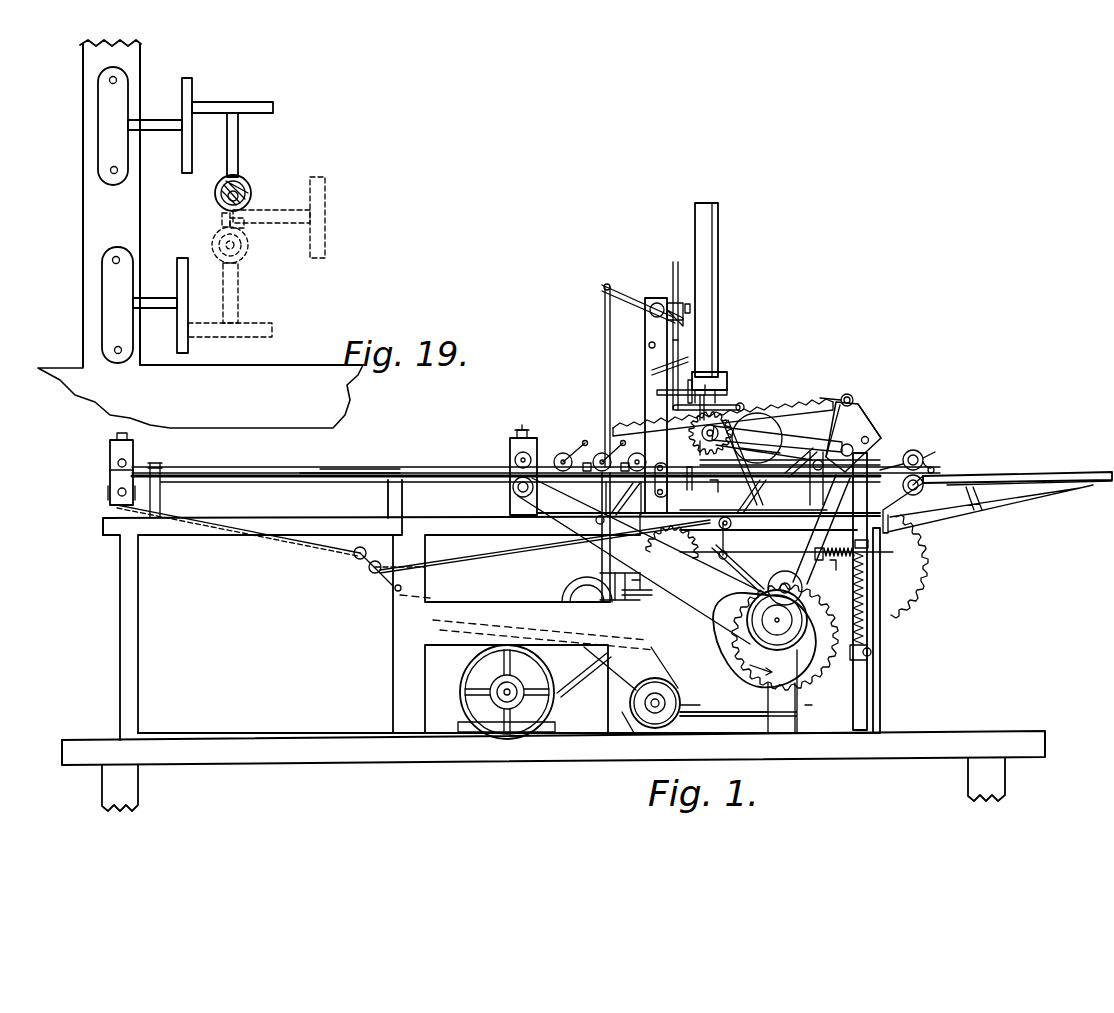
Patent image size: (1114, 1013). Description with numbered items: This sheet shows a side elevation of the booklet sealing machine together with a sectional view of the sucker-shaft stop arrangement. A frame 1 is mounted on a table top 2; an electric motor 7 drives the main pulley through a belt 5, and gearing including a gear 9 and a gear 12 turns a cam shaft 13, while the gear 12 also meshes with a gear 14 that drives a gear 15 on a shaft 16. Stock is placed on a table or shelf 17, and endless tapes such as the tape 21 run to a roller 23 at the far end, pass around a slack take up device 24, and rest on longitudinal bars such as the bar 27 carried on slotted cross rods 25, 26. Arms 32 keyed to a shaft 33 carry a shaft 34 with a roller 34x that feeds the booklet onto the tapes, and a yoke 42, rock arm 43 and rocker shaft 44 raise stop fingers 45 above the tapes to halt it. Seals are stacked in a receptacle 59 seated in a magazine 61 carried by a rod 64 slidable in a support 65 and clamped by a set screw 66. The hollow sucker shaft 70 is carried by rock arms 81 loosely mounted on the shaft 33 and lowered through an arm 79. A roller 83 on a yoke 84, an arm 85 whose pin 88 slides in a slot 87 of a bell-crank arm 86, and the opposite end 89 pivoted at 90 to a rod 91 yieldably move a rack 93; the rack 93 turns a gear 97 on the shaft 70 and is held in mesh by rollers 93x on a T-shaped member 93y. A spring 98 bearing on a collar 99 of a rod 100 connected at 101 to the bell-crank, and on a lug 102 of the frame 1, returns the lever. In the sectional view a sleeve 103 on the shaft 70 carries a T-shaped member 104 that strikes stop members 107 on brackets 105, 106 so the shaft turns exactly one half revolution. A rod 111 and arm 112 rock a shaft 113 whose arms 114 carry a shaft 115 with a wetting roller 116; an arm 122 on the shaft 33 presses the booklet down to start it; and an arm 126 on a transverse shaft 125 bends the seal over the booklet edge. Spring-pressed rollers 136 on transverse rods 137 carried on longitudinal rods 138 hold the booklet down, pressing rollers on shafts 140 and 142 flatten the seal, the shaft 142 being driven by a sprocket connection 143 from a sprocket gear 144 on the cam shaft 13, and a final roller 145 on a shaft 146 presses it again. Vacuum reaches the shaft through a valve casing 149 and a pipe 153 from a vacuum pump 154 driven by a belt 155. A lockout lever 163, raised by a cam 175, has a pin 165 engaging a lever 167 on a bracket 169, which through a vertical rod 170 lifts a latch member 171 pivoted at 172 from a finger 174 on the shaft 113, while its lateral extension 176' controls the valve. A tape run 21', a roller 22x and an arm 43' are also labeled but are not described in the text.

In FIG. 19, the frame 1 is at (87, 224).
In FIG. 1, the frame 1 is at (138, 645).
In FIG. 1, the table top 2 is at (66, 741).
In FIG. 1, the belt 5 is at (584, 677).
In FIG. 1, the electric motor 7 is at (460, 692).
In FIG. 1, the gear 9 is at (701, 701).
In FIG. 1, the gear 12 is at (812, 683).
In FIG. 1, the cam shaft 13 is at (793, 620).
In FIG. 1, the gear 14 is at (920, 577).
In FIG. 1, the gear 15 is at (940, 474).
In FIG. 1, the shaft 16 is at (940, 505).
In FIG. 1, the table or shelf 17 is at (1022, 474).
In FIG. 1, the endless belt or tape 21 is at (536, 513).
In FIG. 1, the cord 21' is at (271, 548).
In FIG. 1, the roller 22x is at (903, 487).
In FIG. 1, the roller 23 is at (117, 488).
In FIG. 1, the slack take up device 24 is at (372, 573).
In FIG. 1, the cross rod 25 is at (375, 481).
In FIG. 1, the cross rod 26 is at (903, 455).
In FIG. 1, the supporting bar 27 is at (262, 481).
In FIG. 1, the arm 32 is at (920, 455).
In FIG. 1, the shaft 33 is at (843, 444).
In FIG. 1, the shaft 34 is at (935, 467).
In FIG. 1, the roller 34x is at (944, 448).
In FIG. 1, the yoke 42 is at (738, 583).
In FIG. 1, the rock arm 43 is at (709, 541).
In FIG. 1, the link 43' is at (842, 569).
In FIG. 1, the rocker shaft 44 is at (732, 523).
In FIG. 1, the fingers or arms 45 is at (697, 489).
In FIG. 1, the receptacle 59 is at (718, 262).
In FIG. 1, the magazine 61 is at (715, 375).
In FIG. 1, the rod 64 is at (678, 350).
In FIG. 1, the support 65 is at (684, 306).
In FIG. 1, the set screw 66 is at (690, 310).
In FIG. 19, the hollow shaft 70 is at (251, 191).
In FIG. 1, the hollow shaft 70 is at (686, 451).
In FIG. 1, the arm 79 is at (787, 480).
In FIG. 1, the rock arm 81 is at (790, 446).
In FIG. 1, the roller 83 is at (800, 596).
In FIG. 1, the yoke 84 is at (791, 585).
In FIG. 1, the arm 85 is at (818, 520).
In FIG. 1, the arm of bell-crank lever 86 is at (866, 426).
In FIG. 1, the slot 87 is at (800, 483).
In FIG. 1, the pin 88 is at (777, 441).
In FIG. 1, the end of bell-crank lever 89 is at (852, 412).
In FIG. 1, the pivotal connection 90 is at (851, 396).
In FIG. 1, the rod 91 is at (833, 398).
In FIG. 1, the rack 93 is at (800, 400).
In FIG. 1, the rollers 93x is at (760, 395).
In FIG. 1, the T-shaped member 93y is at (742, 403).
In FIG. 1, the gear 97 is at (689, 436).
In FIG. 1, the spring 98 is at (866, 630).
In FIG. 1, the collar 99 is at (869, 545).
In FIG. 1, the rod 100 is at (853, 527).
In FIG. 1, the connection 101 is at (868, 438).
In FIG. 1, the lug 102 is at (872, 652).
In FIG. 19, the sleeve 103 is at (246, 181).
In FIG. 19, the T-shaped member 104 is at (250, 100).
In FIG. 1, the T-shaped member 104 is at (727, 384).
In FIG. 19, the bracket 105 is at (106, 148).
In FIG. 1, the bracket 105 is at (657, 392).
In FIG. 19, the bracket 106 is at (110, 302).
In FIG. 1, the bracket 106 is at (661, 491).
In FIG. 19, the stop member 107 is at (188, 158).
In FIG. 1, the stop member 107 is at (700, 395).
In FIG. 1, the rod 111 is at (648, 597).
In FIG. 1, the arm 112 is at (627, 499).
In FIG. 1, the rock shaft 113 is at (649, 347).
In FIG. 1, the arms 114 is at (653, 372).
In FIG. 1, the shaft 115 is at (757, 438).
In FIG. 1, the wetting roller 116 is at (764, 459).
In FIG. 1, the arm 122 is at (767, 445).
In FIG. 1, the shaft 125 is at (596, 517).
In FIG. 1, the arm 126 is at (625, 493).
In FIG. 1, the spring-pressed rollers 136 is at (606, 448).
In FIG. 1, the transverse rods 137 is at (583, 441).
In FIG. 1, the longitudinal rods 138 is at (400, 470).
In FIG. 1, the shaft 140 is at (512, 460).
In FIG. 1, the shaft 142 is at (512, 490).
In FIG. 1, the sprocket connection 143 is at (600, 553).
In FIG. 1, the sprocket gear 144 is at (762, 645).
In FIG. 1, the roller 145 is at (133, 455).
In FIG. 1, the shaft 146 is at (118, 463).
In FIG. 1, the valve casing 149 is at (797, 716).
In FIG. 1, the pipe 153 is at (733, 718).
In FIG. 1, the vacuum pump 154 is at (628, 726).
In FIG. 1, the belt 155 is at (662, 680).
In FIG. 1, the lever 163 is at (703, 578).
In FIG. 1, the pin 165 is at (602, 581).
In FIG. 1, the lever 167 is at (612, 575).
In FIG. 1, the bracket 169 is at (623, 684).
In FIG. 1, the vertically extending rod 170 is at (605, 366).
In FIG. 1, the latch-member 171 is at (618, 286).
In FIG. 1, the pivot 172 is at (654, 287).
In FIG. 1, the finger 174 is at (663, 336).
In FIG. 1, the cam 175 is at (688, 325).
In FIG. 1, the lateral extension 176' is at (588, 599).